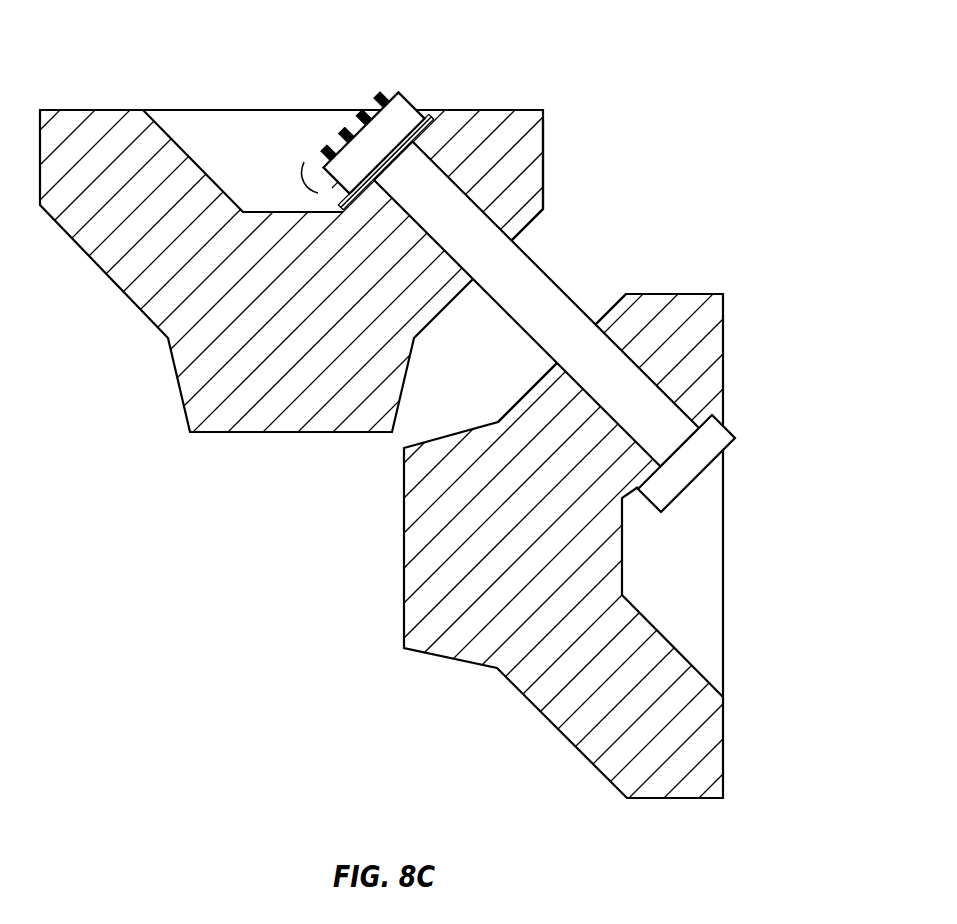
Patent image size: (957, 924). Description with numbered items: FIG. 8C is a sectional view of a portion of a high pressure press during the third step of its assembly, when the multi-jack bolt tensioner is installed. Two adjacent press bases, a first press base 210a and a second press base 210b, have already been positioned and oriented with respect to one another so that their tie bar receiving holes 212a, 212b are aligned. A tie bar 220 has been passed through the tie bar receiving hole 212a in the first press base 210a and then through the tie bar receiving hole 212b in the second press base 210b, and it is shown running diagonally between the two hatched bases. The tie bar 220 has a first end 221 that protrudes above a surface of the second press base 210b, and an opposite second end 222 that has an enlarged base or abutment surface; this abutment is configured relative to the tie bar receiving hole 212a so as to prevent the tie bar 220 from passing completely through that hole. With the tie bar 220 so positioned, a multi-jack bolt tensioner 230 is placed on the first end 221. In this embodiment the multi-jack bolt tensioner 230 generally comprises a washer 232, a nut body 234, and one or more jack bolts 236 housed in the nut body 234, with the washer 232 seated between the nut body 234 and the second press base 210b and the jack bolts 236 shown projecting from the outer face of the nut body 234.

The first press base 210a is at (497, 637).
The second press base 210b is at (218, 352).
The tie bar receiving hole 212a is at (657, 353).
The tie bar receiving hole 212b is at (540, 158).
The tie bar 220 is at (530, 299).
The first end 221 is at (353, 112).
The second end 222 is at (695, 456).
The multi-jack bolt tensioner 230 is at (318, 193).
The washer 232 is at (437, 113).
The nut body 234 is at (430, 116).
The jack bolts 236 is at (341, 130).